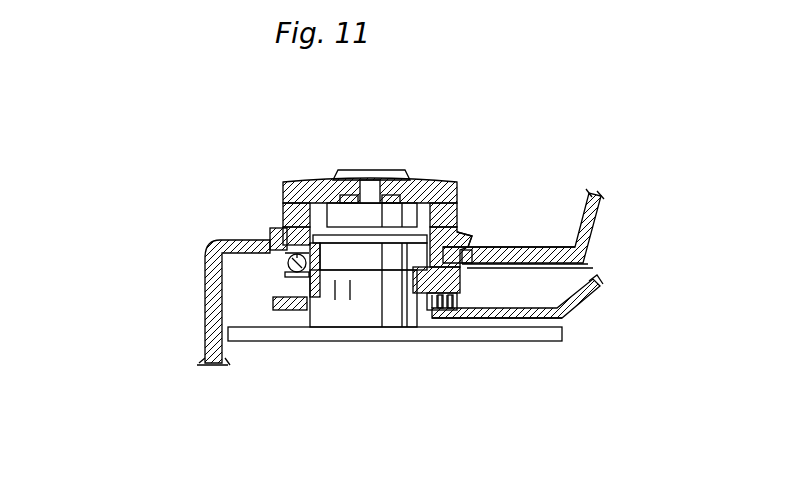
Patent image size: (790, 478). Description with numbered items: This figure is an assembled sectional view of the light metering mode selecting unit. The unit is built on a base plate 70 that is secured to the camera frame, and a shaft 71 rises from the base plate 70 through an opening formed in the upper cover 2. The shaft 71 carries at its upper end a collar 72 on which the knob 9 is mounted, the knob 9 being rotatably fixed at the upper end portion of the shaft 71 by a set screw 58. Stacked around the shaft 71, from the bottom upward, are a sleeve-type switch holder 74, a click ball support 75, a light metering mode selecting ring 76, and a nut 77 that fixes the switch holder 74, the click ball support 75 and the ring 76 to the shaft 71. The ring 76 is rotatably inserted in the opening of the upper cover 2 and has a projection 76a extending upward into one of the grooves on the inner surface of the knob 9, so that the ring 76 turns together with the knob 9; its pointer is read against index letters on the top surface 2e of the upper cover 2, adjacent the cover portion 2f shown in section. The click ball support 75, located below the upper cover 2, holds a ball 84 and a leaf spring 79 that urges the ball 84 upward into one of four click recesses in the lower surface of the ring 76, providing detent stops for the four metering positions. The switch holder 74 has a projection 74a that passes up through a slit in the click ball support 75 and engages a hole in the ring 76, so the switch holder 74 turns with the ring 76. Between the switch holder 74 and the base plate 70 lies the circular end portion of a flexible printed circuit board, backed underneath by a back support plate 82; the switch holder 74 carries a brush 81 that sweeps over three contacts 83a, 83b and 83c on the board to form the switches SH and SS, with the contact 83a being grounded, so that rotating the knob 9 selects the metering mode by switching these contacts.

The upper cover 2 is at (600, 203).
The top surface of the upper cover 2e is at (247, 238).
The frame flange portion 2f is at (485, 247).
The knob 9 is at (453, 185).
The set screw 58 is at (378, 180).
The base plate 70 is at (563, 340).
The shaft 71 is at (365, 290).
The collar 72 is at (417, 182).
The switch holder 74 is at (460, 285).
The projection of the switch holder 74a is at (593, 267).
The click ball support 75 is at (472, 258).
The light metering mode selecting ring 76 is at (470, 245).
The projection of the ring 76a is at (462, 228).
The nut 77 is at (308, 185).
The leaf spring 79 is at (288, 273).
The brush 81 is at (480, 314).
The back support plate 82 is at (562, 312).
The contact 83a is at (430, 305).
The contact 83b is at (440, 312).
The contact 83c is at (447, 312).
The ball 84 is at (292, 266).